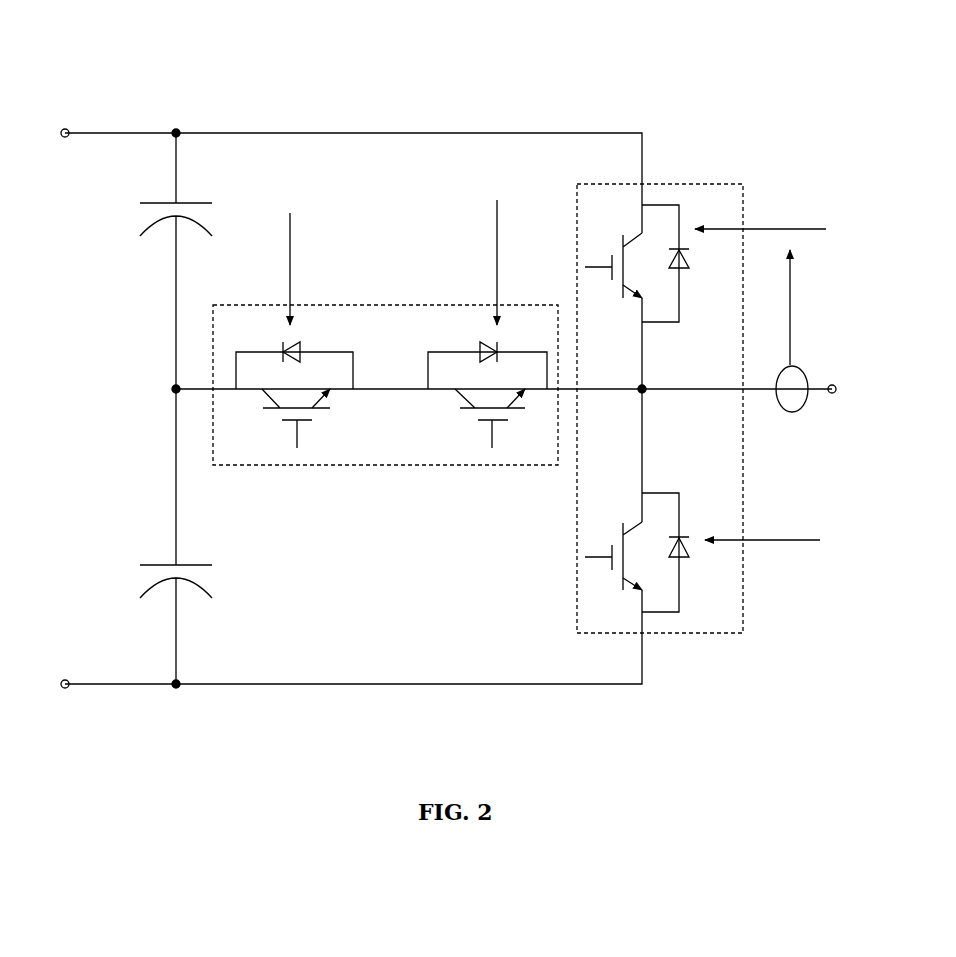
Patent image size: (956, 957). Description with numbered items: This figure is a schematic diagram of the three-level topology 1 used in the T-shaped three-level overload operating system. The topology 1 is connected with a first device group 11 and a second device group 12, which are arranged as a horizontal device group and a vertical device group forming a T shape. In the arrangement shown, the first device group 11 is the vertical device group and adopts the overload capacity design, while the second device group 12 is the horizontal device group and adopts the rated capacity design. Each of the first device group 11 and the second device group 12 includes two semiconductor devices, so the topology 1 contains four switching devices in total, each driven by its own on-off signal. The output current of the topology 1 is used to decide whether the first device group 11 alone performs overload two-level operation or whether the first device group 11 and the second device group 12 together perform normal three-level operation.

The topology 1 is at (438, 97).
The first device group 11 is at (693, 185).
The second device group 12 is at (350, 304).